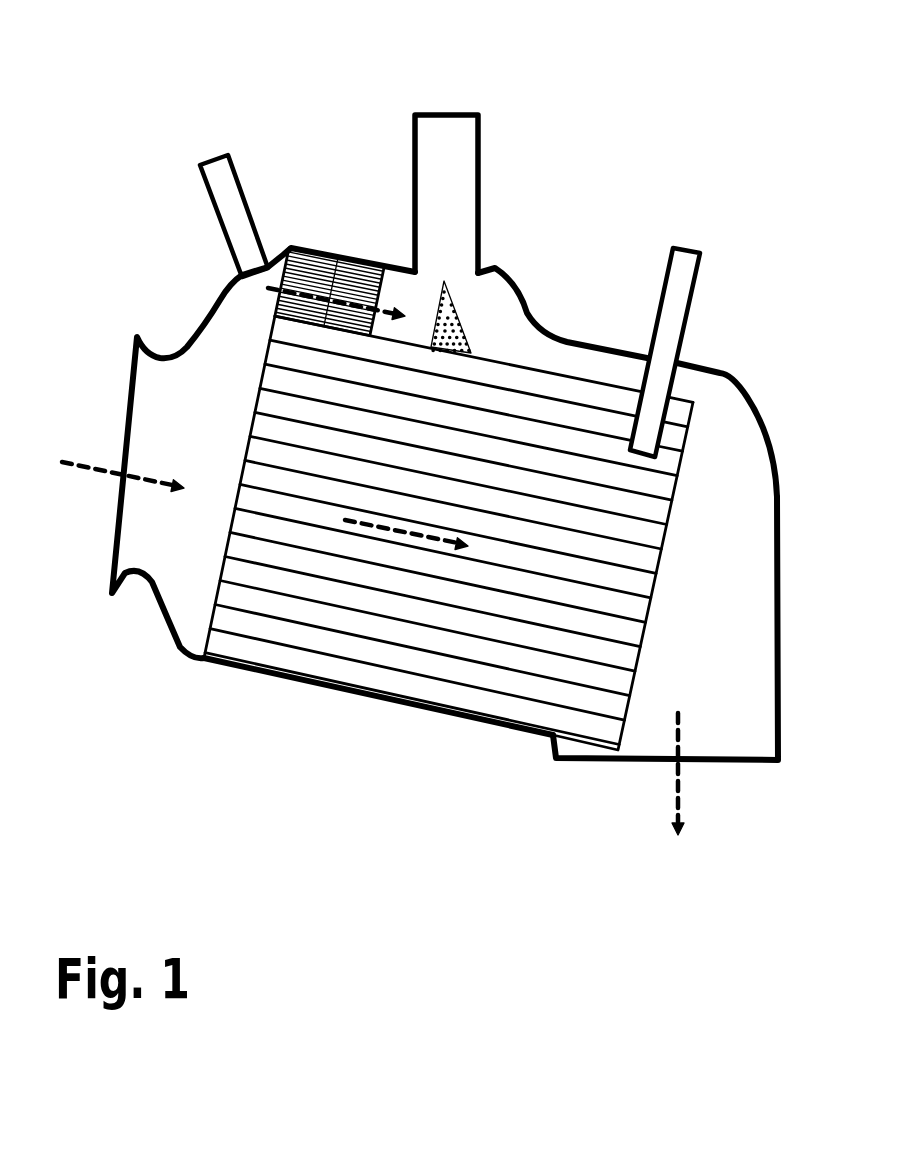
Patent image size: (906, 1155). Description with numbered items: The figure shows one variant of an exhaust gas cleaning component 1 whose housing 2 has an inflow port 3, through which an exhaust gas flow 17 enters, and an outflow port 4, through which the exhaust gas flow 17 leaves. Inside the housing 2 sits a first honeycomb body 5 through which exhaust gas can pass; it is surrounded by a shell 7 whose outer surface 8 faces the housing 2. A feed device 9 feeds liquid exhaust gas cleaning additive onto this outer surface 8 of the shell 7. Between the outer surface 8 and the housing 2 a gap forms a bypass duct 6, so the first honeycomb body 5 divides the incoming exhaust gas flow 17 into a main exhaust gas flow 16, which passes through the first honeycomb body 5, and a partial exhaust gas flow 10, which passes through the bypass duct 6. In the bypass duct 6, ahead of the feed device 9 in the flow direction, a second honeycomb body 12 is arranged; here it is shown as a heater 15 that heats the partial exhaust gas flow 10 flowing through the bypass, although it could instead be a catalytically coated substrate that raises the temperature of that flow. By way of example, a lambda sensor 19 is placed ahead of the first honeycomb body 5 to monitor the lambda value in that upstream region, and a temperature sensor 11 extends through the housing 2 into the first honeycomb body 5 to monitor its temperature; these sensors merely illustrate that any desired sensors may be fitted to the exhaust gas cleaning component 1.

The exhaust gas cleaning component 1 is at (173, 104).
The housing 2 is at (542, 274).
The inflow port 3 is at (127, 358).
The outflow port 4 is at (743, 763).
The first honeycomb body 5 is at (250, 370).
The bypass duct 6 is at (567, 357).
The shell 7 is at (492, 330).
The outer surface 8 is at (513, 355).
The feed device 9 is at (484, 174).
The partial exhaust gas flow 10 is at (354, 298).
The temperature sensor 11 is at (697, 295).
The second honeycomb body 12 is at (397, 267).
The heater 15 is at (308, 300).
The main exhaust gas flow 16 is at (397, 558).
The exhaust gas flow 17 is at (83, 468).
The lambda sensor 19 is at (247, 176).